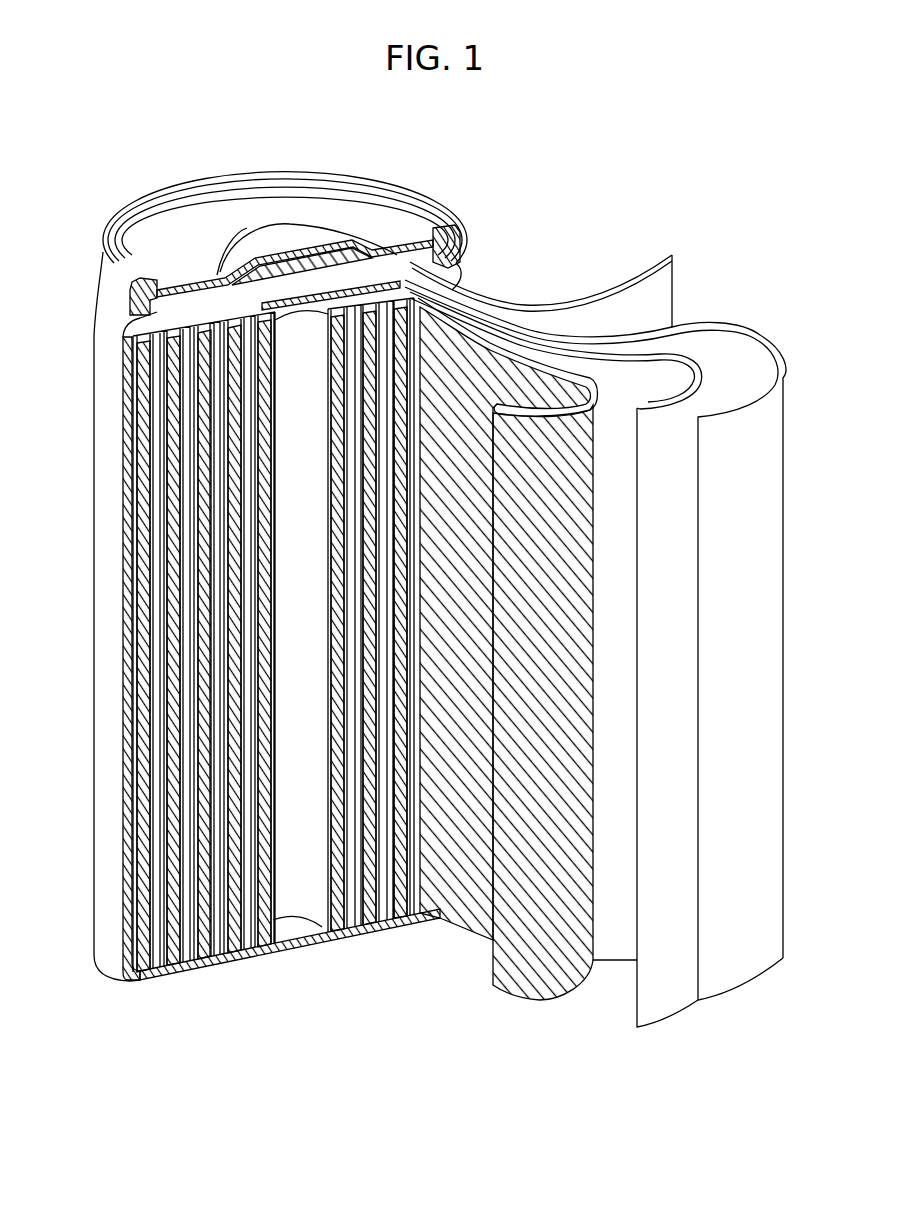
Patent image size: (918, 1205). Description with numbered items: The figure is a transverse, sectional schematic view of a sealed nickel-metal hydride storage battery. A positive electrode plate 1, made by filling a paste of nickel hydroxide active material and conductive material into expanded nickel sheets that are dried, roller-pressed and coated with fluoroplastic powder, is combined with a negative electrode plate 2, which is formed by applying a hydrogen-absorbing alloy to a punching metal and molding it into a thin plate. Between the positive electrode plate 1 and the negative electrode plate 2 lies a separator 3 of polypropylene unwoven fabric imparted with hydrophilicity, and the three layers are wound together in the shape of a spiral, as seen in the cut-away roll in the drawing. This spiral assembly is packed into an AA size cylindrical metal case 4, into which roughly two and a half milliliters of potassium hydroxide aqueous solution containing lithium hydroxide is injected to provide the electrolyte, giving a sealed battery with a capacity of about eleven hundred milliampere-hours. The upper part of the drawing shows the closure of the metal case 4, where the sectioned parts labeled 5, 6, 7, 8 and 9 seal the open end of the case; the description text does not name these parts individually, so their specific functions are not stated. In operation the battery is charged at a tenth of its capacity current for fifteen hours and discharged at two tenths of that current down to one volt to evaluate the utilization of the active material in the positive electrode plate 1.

The positive electrode plate 1 is at (573, 845).
The negative electrode plate 2 is at (750, 524).
The separator 3 is at (668, 678).
The metal case 4 is at (106, 732).
The sealing plate 5 is at (447, 238).
The terminal cap 6 is at (258, 243).
The PTC element 7 is at (307, 267).
The gasket 8 is at (130, 296).
The insulating plate 9 is at (123, 340).